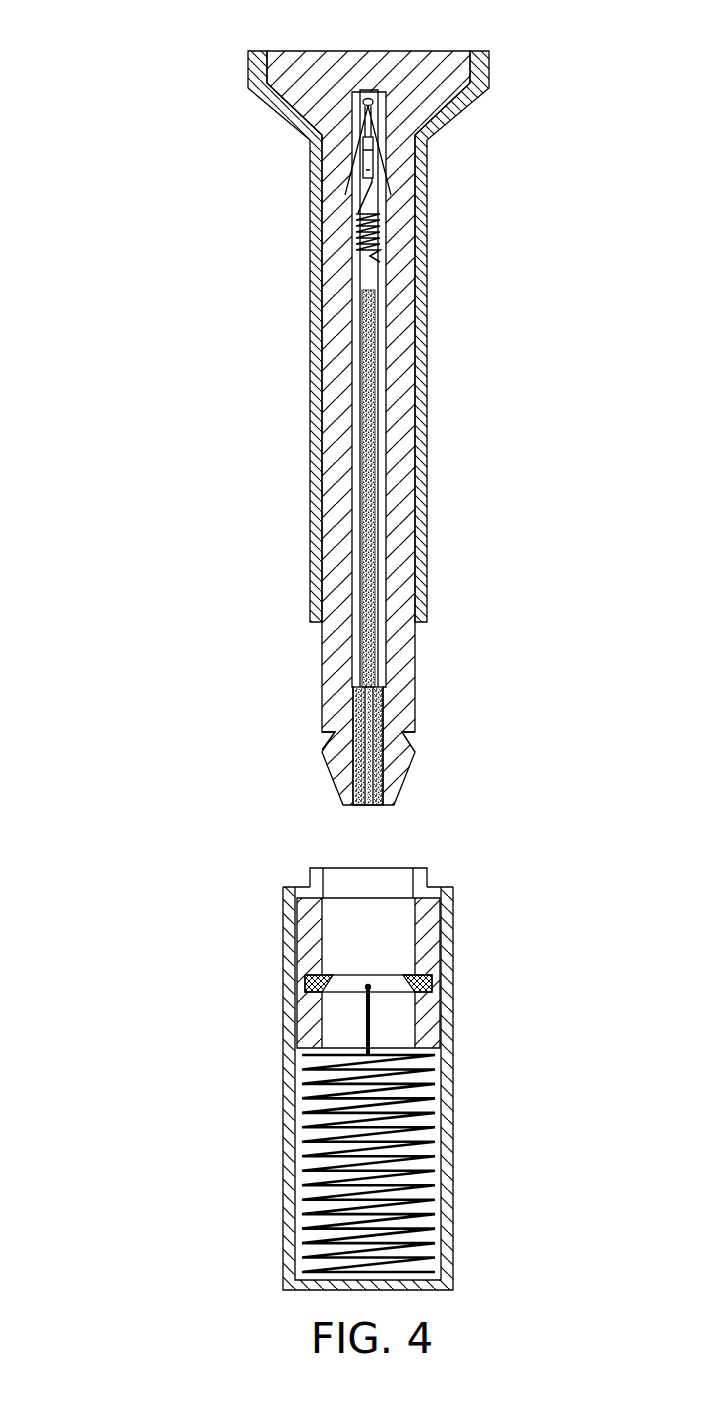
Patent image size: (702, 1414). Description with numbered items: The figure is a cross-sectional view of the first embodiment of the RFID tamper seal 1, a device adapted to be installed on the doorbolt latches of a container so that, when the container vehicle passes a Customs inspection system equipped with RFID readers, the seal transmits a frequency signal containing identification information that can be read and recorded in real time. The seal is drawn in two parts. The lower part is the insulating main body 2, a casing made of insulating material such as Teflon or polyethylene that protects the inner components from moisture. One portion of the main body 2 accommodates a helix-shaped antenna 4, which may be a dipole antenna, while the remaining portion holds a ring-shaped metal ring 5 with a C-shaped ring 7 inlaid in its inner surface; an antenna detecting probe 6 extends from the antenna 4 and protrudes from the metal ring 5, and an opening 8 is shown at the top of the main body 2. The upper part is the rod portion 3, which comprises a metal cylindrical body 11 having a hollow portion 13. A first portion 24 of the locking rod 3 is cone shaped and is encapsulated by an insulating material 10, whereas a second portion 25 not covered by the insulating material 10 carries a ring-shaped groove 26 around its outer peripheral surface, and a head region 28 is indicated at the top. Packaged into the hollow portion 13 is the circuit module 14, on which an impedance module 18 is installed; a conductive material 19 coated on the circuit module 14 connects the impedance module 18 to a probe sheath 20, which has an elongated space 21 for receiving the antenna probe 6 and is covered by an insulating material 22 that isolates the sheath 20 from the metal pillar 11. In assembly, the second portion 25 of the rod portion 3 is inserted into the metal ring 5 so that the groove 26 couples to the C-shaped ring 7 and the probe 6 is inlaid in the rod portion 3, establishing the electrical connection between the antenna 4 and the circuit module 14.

The RFID tamper seal 1 is at (135, 820).
The insulating main body 2 is at (450, 1162).
The rod portion 3 is at (346, 425).
The antenna 4 is at (303, 1120).
The metal ring 5 is at (420, 960).
The antenna detecting probe 6 is at (370, 1025).
The C-shaped ring 7 is at (305, 980).
The opening 8 is at (395, 935).
The insulating material 10 is at (418, 530).
The metal cylindrical body 11 is at (402, 585).
The hollow portion 13 is at (355, 330).
The circuit module 14 is at (367, 272).
The impedance module 18 is at (378, 226).
The conductive material 19 is at (365, 402).
The probe sheath 20 is at (383, 692).
The elongated space 21 is at (360, 775).
The insulating material 22 is at (353, 808).
The first portion 24 is at (217, 52).
The second portion 25 is at (217, 622).
The ring-shaped groove 26 is at (408, 737).
The head portion 28 is at (253, 42).